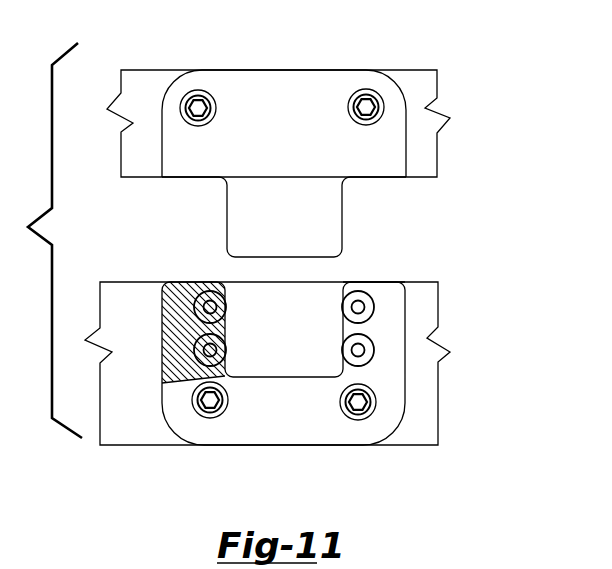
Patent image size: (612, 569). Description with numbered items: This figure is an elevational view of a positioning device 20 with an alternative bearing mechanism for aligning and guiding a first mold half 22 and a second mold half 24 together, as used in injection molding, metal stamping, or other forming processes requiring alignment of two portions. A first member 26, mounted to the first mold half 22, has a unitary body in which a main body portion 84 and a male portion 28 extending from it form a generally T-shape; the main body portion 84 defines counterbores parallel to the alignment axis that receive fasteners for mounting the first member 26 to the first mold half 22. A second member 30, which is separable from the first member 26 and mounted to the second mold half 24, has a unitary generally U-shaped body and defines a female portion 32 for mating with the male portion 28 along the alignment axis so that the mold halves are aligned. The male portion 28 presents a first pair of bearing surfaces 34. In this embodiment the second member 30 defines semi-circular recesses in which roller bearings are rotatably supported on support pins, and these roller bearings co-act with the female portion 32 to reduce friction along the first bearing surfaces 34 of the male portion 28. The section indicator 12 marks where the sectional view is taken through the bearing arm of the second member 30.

The clamp assembly 20 is at (452, 221).
The upper block 22 is at (412, 80).
The lower block 24 is at (427, 432).
The upper clamp member 26 is at (308, 85).
The tongue 28 is at (328, 232).
The lower clamp member 30 is at (252, 422).
The arm 32 is at (393, 298).
The shoulder 34 is at (227, 203).
The fastener 84 is at (249, 80).
The section line 12 is at (142, 305).